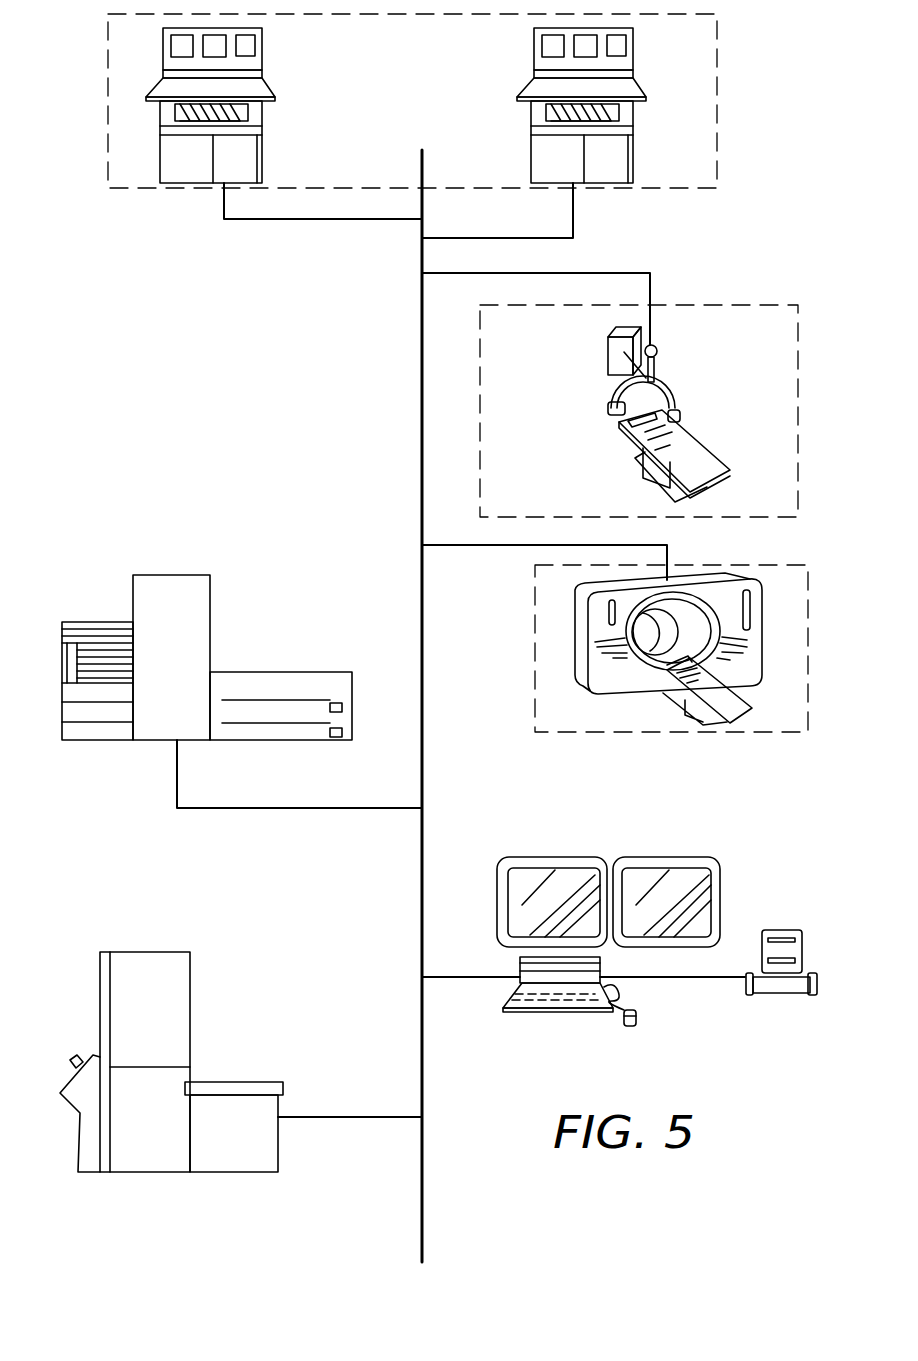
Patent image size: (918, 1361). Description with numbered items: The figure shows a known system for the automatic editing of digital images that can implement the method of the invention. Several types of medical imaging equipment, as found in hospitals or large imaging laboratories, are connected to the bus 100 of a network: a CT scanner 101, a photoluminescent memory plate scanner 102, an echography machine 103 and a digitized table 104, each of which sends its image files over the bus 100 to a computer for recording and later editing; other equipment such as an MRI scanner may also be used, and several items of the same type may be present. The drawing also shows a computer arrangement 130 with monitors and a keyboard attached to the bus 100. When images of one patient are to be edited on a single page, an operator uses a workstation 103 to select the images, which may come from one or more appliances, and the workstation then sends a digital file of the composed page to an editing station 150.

The bus 100 is at (422, 453).
The CT scanner 101 is at (763, 655).
The photoluminescent memory plate scanner 102 is at (210, 640).
The echography machine 103 is at (187, 167).
The digitized table 104 is at (700, 433).
The computer system 130 is at (772, 890).
The editing station 150 is at (220, 1003).